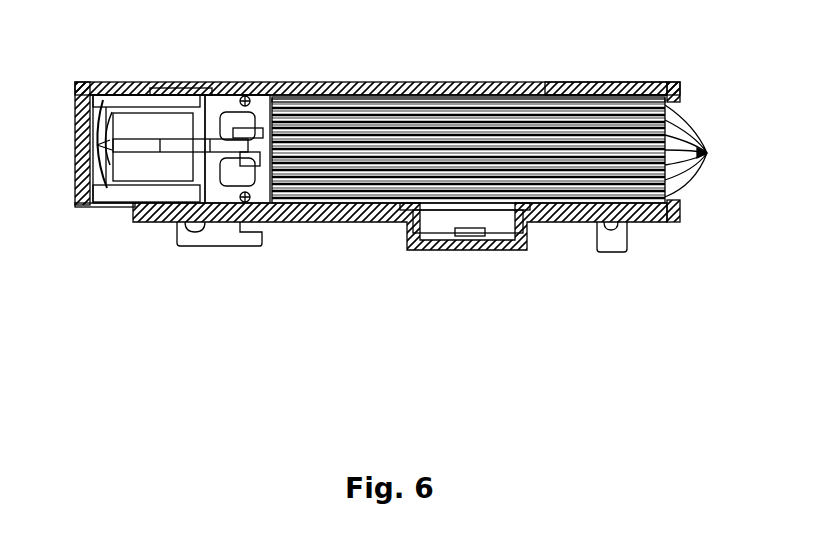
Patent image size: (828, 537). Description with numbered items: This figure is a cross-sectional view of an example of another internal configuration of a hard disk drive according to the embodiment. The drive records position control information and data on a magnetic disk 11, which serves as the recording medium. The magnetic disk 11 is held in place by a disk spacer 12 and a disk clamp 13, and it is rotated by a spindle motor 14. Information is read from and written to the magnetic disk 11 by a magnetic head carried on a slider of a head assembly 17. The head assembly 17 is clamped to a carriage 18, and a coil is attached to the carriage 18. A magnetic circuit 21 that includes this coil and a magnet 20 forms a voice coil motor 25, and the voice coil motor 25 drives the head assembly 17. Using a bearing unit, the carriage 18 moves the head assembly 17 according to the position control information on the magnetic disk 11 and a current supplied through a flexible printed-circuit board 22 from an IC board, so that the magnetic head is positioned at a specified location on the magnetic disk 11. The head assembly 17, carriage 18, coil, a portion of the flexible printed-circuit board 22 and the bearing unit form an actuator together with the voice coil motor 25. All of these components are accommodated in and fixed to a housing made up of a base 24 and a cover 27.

The magnetic disk 11 is at (712, 151).
The disk spacer 12 is at (535, 84).
The disk clamp 13 is at (505, 100).
The spindle motor 14 is at (493, 236).
The head assembly 17 is at (443, 108).
The carriage 18 is at (292, 84).
The magnet 20 is at (140, 128).
The magnetic circuit 21 is at (177, 88).
The flexible printed-circuit board 22 is at (210, 200).
The base 24 is at (647, 222).
The voice coil motor 25 is at (108, 147).
The cover 27 is at (632, 84).